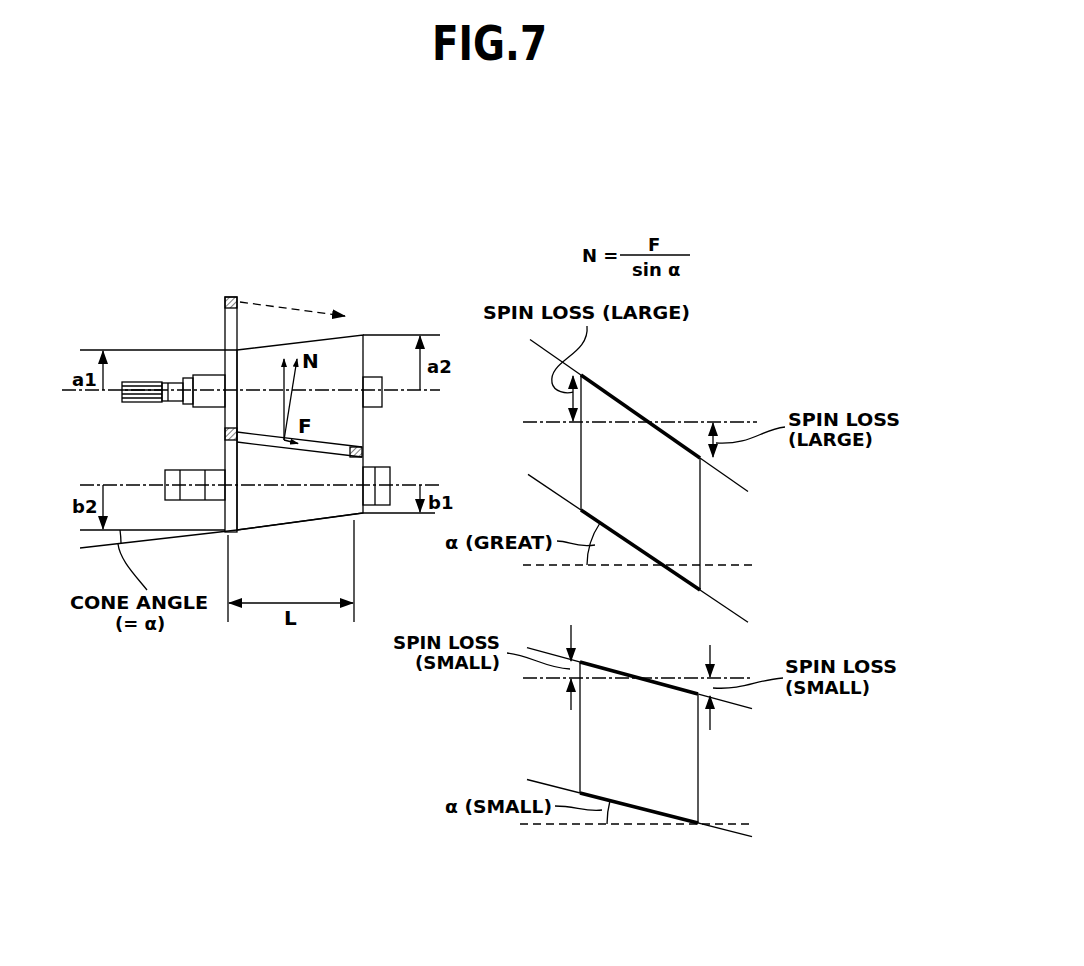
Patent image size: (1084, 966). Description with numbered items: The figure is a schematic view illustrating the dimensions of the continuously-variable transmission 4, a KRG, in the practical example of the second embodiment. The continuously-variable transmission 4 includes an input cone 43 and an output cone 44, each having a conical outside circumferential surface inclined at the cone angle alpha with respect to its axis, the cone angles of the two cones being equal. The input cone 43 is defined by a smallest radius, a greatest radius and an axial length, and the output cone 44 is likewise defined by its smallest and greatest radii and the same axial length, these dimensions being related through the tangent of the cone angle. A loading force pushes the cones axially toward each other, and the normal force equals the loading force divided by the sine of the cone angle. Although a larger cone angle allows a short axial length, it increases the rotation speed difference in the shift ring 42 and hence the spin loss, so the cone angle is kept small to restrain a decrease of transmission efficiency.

The continuously-variable transmission 4 is at (213, 320).
The shift ring 42 is at (232, 297).
The input cone 43 is at (362, 335).
The output cone 44 is at (305, 520).